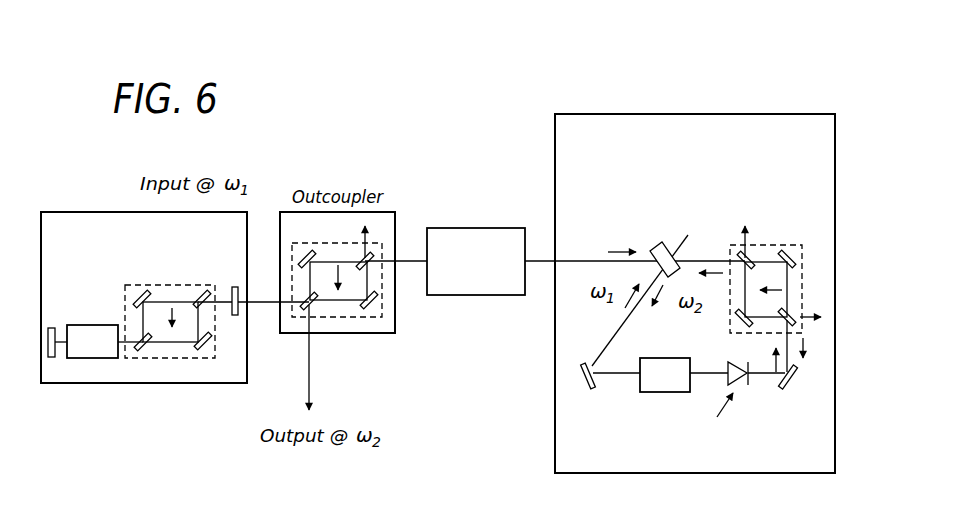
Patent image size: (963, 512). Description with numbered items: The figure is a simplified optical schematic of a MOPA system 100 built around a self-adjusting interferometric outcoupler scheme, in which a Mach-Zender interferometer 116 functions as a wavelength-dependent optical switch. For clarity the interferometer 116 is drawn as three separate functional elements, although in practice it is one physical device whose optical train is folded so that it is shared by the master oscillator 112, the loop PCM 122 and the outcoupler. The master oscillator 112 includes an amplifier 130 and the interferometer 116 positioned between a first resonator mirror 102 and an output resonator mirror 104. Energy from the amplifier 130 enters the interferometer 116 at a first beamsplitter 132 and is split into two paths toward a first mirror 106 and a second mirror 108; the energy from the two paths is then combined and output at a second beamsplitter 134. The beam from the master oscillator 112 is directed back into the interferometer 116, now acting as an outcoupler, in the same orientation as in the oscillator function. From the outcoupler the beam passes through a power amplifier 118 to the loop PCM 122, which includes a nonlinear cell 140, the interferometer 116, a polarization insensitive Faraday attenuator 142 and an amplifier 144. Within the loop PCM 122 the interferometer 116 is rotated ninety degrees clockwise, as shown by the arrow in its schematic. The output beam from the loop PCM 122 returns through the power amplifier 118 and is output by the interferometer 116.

The MOPA system 100 is at (779, 100).
The first resonator mirror 102 is at (50, 326).
The output resonator mirror 104 is at (237, 315).
The first mirror 106 is at (138, 296).
The second mirror 108 is at (232, 352).
The master oscillator 112 is at (91, 212).
The interferometer 116 is at (182, 359).
The power amplifier 118 is at (476, 228).
The loop PCM 122 is at (643, 113).
The amplifier 130 is at (80, 325).
The first beamsplitter 132 is at (147, 345).
The second beamsplitter 134 is at (200, 295).
The nonlinear cell 140 is at (662, 245).
The polarization insensitive Faraday attenuator 142 is at (742, 363).
The amplifier 144 is at (663, 357).